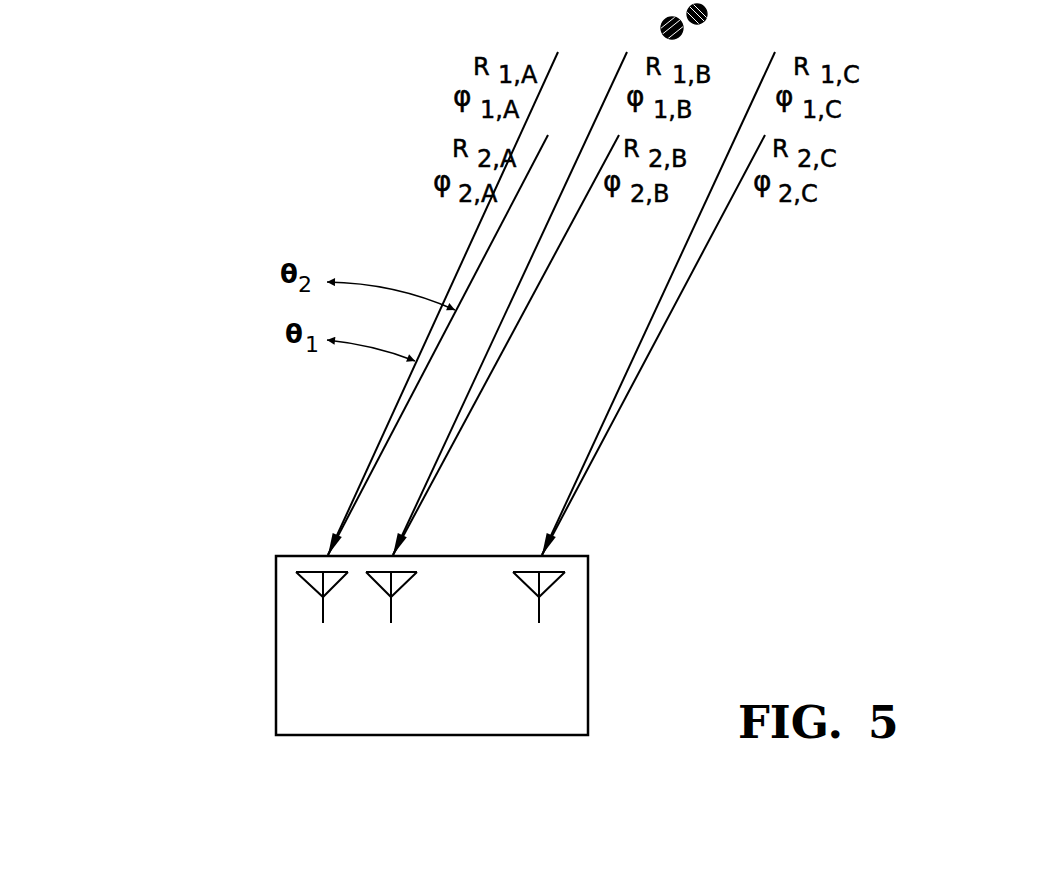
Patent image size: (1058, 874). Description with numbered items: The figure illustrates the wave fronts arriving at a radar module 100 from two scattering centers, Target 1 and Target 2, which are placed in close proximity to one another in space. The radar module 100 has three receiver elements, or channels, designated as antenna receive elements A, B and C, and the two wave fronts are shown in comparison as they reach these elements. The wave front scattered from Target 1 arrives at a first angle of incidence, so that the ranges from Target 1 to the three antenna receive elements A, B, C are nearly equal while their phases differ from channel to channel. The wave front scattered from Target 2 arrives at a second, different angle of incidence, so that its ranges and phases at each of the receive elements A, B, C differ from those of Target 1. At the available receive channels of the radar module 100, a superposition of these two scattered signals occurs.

The radar module 100 is at (510, 602).
The Target 1 is at (248, 437).
The Target 2 is at (278, 388).
The antenna receive element A is at (322, 616).
The antenna receive element B is at (391, 616).
The antenna receive element C is at (539, 616).